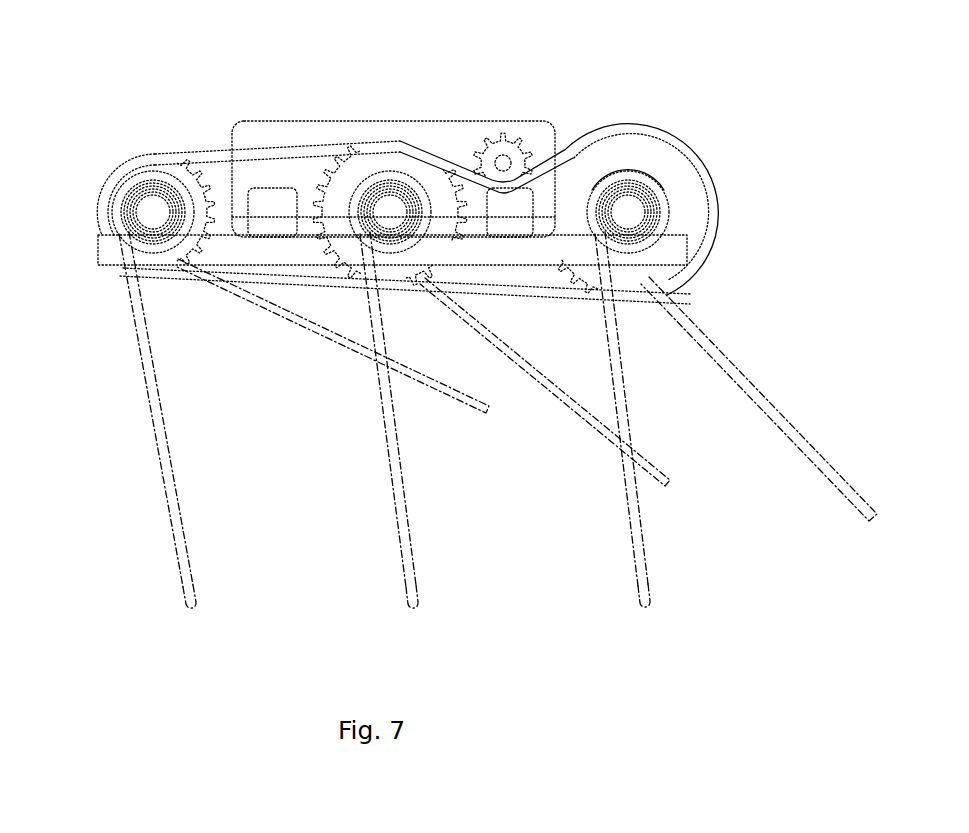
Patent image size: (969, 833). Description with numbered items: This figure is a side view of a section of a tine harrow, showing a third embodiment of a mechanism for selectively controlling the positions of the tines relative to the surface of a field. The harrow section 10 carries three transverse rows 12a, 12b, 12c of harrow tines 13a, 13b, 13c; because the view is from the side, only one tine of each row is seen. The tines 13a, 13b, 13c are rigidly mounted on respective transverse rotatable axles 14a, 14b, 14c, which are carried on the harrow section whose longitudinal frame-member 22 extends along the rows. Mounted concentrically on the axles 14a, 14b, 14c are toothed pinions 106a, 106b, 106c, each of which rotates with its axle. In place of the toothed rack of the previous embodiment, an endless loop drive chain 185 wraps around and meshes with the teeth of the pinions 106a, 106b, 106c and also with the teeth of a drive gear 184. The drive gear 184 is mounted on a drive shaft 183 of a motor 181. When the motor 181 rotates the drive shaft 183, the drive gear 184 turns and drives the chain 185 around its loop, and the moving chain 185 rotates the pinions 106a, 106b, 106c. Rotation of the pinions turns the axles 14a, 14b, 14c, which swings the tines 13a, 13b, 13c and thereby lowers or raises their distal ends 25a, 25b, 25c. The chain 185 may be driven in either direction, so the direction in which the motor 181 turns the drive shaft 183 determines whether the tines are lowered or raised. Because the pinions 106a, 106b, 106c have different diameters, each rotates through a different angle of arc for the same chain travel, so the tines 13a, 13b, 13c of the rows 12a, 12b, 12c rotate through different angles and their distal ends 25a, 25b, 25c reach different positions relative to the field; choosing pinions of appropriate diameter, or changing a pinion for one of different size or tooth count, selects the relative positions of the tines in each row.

The harrow section 10 is at (799, 307).
The transverse row 12a is at (631, 217).
The transverse row 12b is at (391, 219).
The transverse row 12c is at (155, 217).
The harrow tine 13a is at (636, 522).
The harrow tine 13b is at (388, 437).
The harrow tine 13c is at (152, 403).
The transverse rotatable axle 14a is at (650, 194).
The transverse rotatable axle 14b is at (423, 220).
The transverse rotatable axle 14c is at (132, 195).
The longitudinal frame-member 22 is at (672, 250).
The distal end 25a is at (644, 606).
The distal end 25b is at (413, 606).
The distal end 25c is at (190, 606).
The toothed pinion 106a is at (662, 165).
The toothed pinion 106b is at (393, 165).
The toothed pinion 106c is at (178, 172).
The motor 181 is at (265, 132).
The drive shaft 183 is at (500, 160).
The drive gear 184 is at (510, 160).
The endless loop drive chain 185 is at (650, 133).